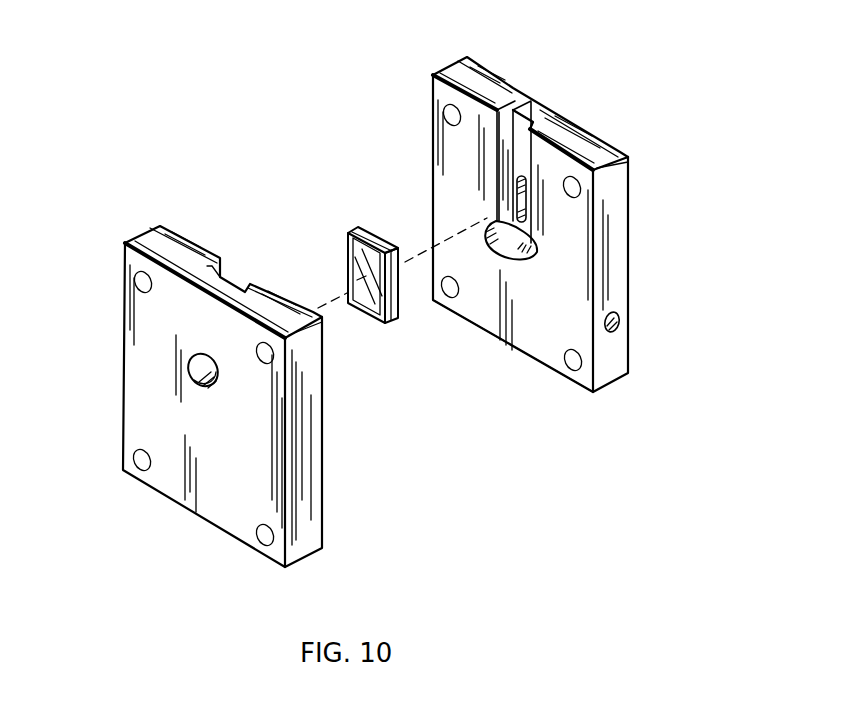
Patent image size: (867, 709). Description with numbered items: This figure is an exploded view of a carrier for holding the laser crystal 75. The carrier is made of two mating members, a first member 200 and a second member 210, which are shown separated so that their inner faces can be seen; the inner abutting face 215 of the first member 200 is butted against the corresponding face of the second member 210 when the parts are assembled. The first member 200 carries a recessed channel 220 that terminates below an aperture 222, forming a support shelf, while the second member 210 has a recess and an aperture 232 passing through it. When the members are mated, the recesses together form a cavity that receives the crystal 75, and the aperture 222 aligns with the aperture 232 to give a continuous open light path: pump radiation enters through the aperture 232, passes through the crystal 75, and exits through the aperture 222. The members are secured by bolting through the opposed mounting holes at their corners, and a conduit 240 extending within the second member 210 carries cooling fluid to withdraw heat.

The first mating member 200 is at (228, 533).
The aperture 232 is at (192, 373).
The crystal 75 is at (358, 230).
The second mating member 210 is at (602, 390).
The inner abutting face 215 is at (569, 258).
The recessed channel 220 is at (518, 106).
The aperture 222 is at (517, 192).
The conduit 240 is at (620, 322).